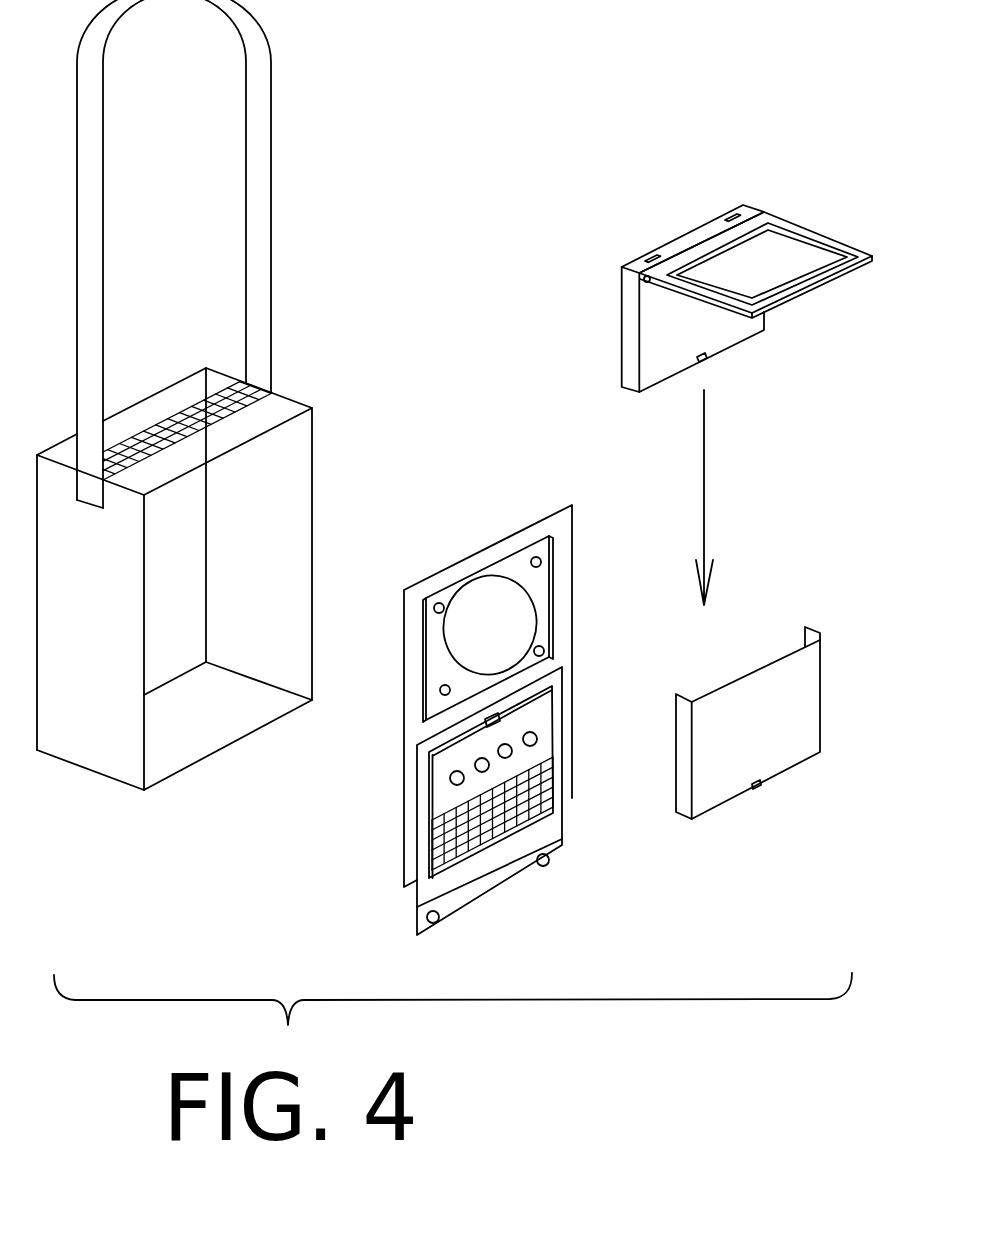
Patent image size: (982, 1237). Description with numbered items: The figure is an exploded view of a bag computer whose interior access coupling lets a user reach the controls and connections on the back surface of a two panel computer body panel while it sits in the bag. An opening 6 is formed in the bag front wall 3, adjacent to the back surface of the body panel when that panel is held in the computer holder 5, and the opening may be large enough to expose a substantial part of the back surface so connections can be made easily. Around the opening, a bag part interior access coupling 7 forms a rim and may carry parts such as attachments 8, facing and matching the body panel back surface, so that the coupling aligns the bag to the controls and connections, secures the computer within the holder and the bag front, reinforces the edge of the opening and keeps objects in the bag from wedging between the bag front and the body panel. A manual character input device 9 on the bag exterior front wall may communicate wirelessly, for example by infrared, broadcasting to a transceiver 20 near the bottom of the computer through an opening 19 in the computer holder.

The bag front wall 3 is at (445, 562).
The computer holder 5 is at (713, 768).
The opening 6 is at (497, 600).
The bag part interior access coupling 7 is at (538, 582).
The attachments 8 is at (443, 694).
The manual character input device 9 is at (457, 795).
The opening in the computer holder 19 is at (756, 787).
The transceiver 20 is at (702, 362).